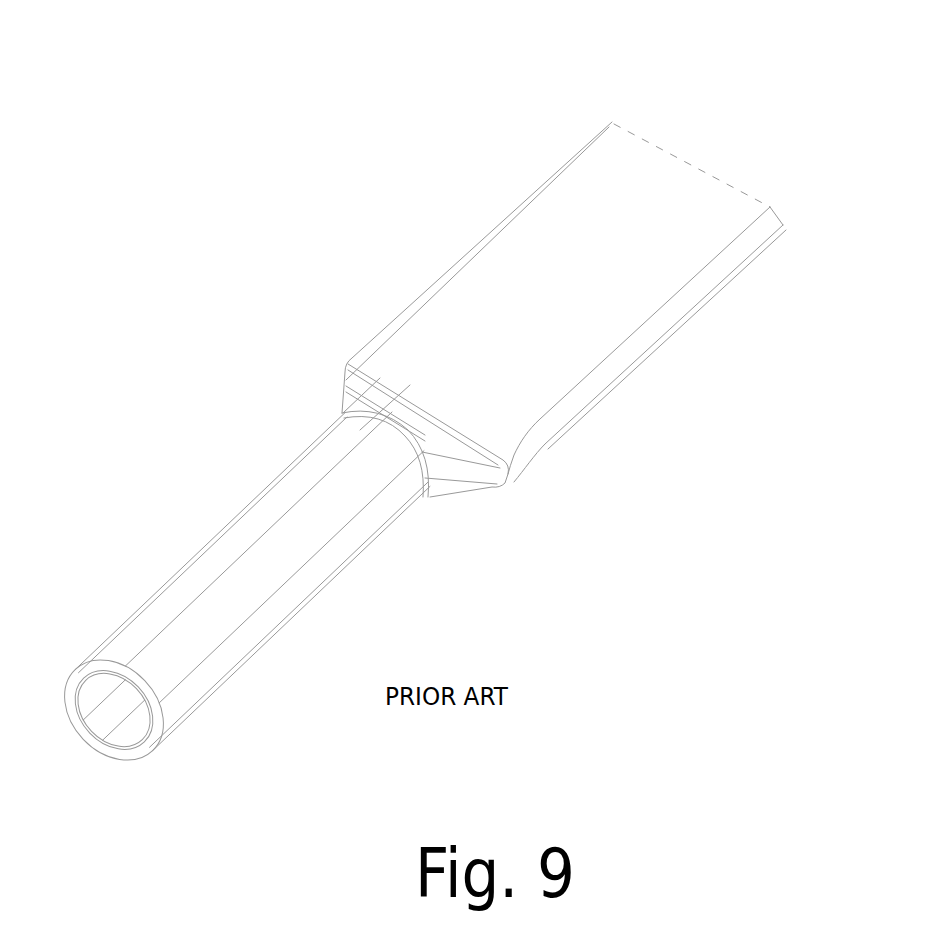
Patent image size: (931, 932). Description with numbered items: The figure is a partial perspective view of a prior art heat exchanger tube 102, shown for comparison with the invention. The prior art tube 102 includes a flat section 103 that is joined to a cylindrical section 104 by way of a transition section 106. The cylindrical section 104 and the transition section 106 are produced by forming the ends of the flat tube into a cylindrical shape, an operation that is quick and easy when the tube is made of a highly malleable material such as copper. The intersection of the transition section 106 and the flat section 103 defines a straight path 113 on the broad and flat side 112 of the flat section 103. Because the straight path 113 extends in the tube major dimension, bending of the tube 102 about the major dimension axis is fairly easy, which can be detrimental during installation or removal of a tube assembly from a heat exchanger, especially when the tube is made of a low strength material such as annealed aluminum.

The prior art tube 102 is at (402, 207).
The flat section 103 is at (570, 338).
The cylindrical section 104 is at (153, 612).
The transition section 106 is at (458, 478).
The broad and flat side 112 is at (634, 234).
The straight path 113 is at (417, 402).